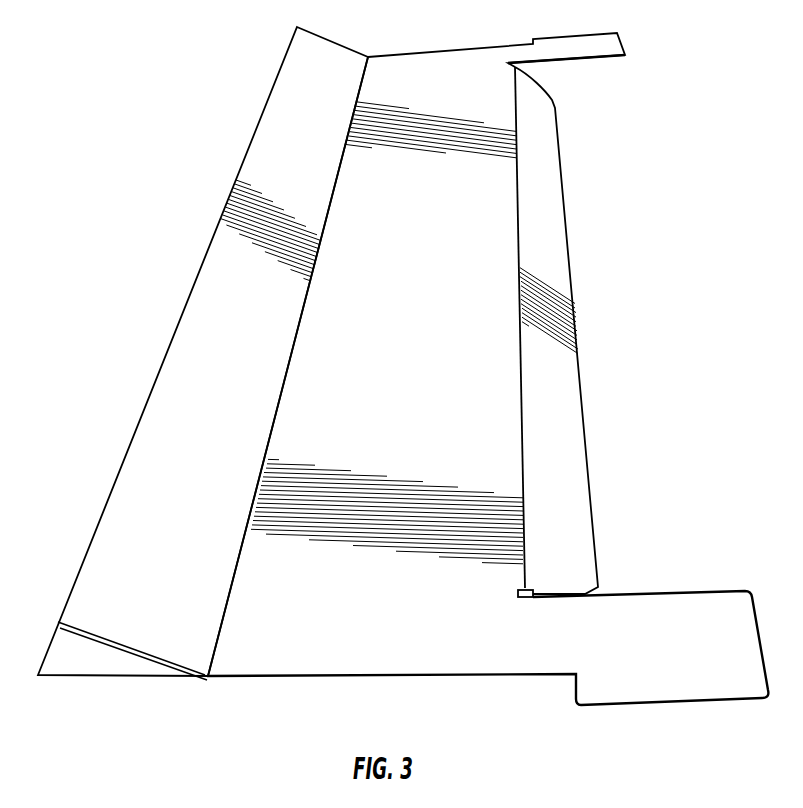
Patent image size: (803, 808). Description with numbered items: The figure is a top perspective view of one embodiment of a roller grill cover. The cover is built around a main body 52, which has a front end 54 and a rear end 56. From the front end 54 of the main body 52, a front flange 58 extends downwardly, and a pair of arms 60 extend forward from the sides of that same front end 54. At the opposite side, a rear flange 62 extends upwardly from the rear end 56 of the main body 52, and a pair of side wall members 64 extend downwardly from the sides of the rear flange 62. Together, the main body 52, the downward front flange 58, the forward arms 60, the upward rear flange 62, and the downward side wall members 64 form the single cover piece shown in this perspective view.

The main body 52 is at (435, 330).
The front end 54 is at (517, 130).
The rear end 56 is at (270, 437).
The front flange 58 is at (547, 235).
The pair of arms 60 is at (663, 627).
The rear flange 62 is at (227, 258).
The pair of side wall members 64 is at (88, 660).